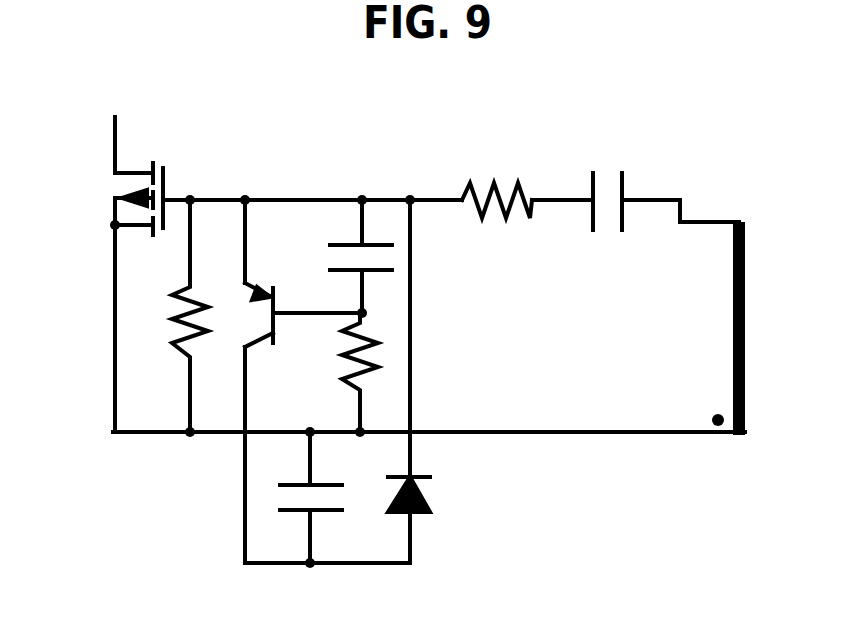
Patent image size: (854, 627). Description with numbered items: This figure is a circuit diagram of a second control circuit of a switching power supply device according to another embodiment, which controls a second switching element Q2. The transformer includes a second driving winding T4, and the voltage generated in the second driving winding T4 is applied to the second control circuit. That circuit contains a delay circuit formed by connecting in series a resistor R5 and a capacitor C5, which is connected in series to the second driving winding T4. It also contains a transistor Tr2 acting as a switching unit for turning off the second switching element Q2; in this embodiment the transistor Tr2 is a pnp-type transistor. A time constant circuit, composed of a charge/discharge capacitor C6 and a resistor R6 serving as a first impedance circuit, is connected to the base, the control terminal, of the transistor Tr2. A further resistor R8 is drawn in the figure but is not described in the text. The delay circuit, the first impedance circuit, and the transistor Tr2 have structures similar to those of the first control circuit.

The second switching element Q2 is at (139, 161).
The resistor R8 is at (175, 316).
The transistor Tr2 is at (303, 331).
The charge/discharge capacitor C6 is at (338, 256).
The resistor R6 is at (343, 372).
The resistor R5 is at (497, 182).
The capacitor C5 is at (604, 183).
The second driving winding T4 is at (717, 328).